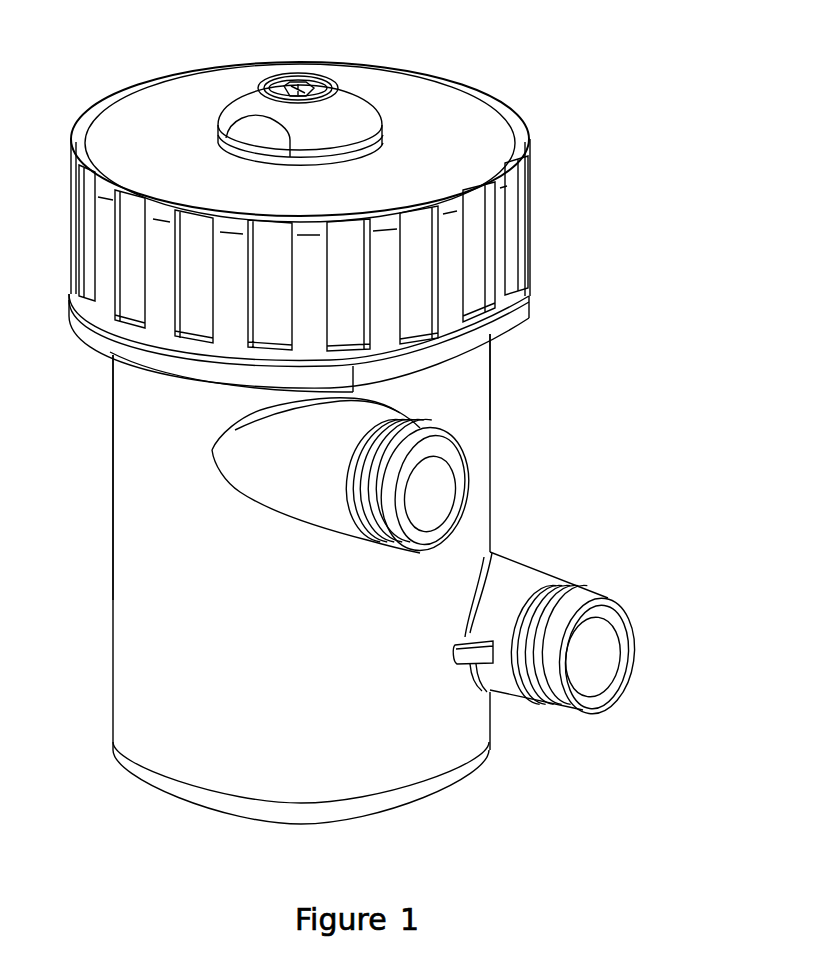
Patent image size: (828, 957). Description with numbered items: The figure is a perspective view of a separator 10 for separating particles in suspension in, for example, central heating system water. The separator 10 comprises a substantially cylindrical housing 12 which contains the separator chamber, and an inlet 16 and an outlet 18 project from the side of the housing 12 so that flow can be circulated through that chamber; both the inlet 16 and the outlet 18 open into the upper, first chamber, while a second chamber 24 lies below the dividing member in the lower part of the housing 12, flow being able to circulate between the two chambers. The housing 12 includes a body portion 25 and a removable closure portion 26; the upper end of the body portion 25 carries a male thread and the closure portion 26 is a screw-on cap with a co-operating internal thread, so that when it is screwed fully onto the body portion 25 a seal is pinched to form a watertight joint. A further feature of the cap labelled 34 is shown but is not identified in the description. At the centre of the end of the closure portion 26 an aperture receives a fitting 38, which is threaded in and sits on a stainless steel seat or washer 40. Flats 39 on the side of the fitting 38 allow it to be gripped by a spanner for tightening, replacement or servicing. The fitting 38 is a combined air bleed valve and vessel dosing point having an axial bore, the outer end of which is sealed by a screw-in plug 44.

The separator 10 is at (648, 375).
The housing 12 is at (133, 582).
The inlet 16 is at (605, 656).
The outlet 18 is at (432, 488).
The second chamber 24 is at (137, 452).
The body portion 25 is at (463, 383).
The closure portion 26 is at (527, 218).
The cap flange 34 is at (95, 340).
The fitting 38 is at (355, 107).
The flats 39 is at (248, 128).
The stainless steel seat or washer 40 is at (383, 131).
The screw-in plug 44 is at (299, 88).